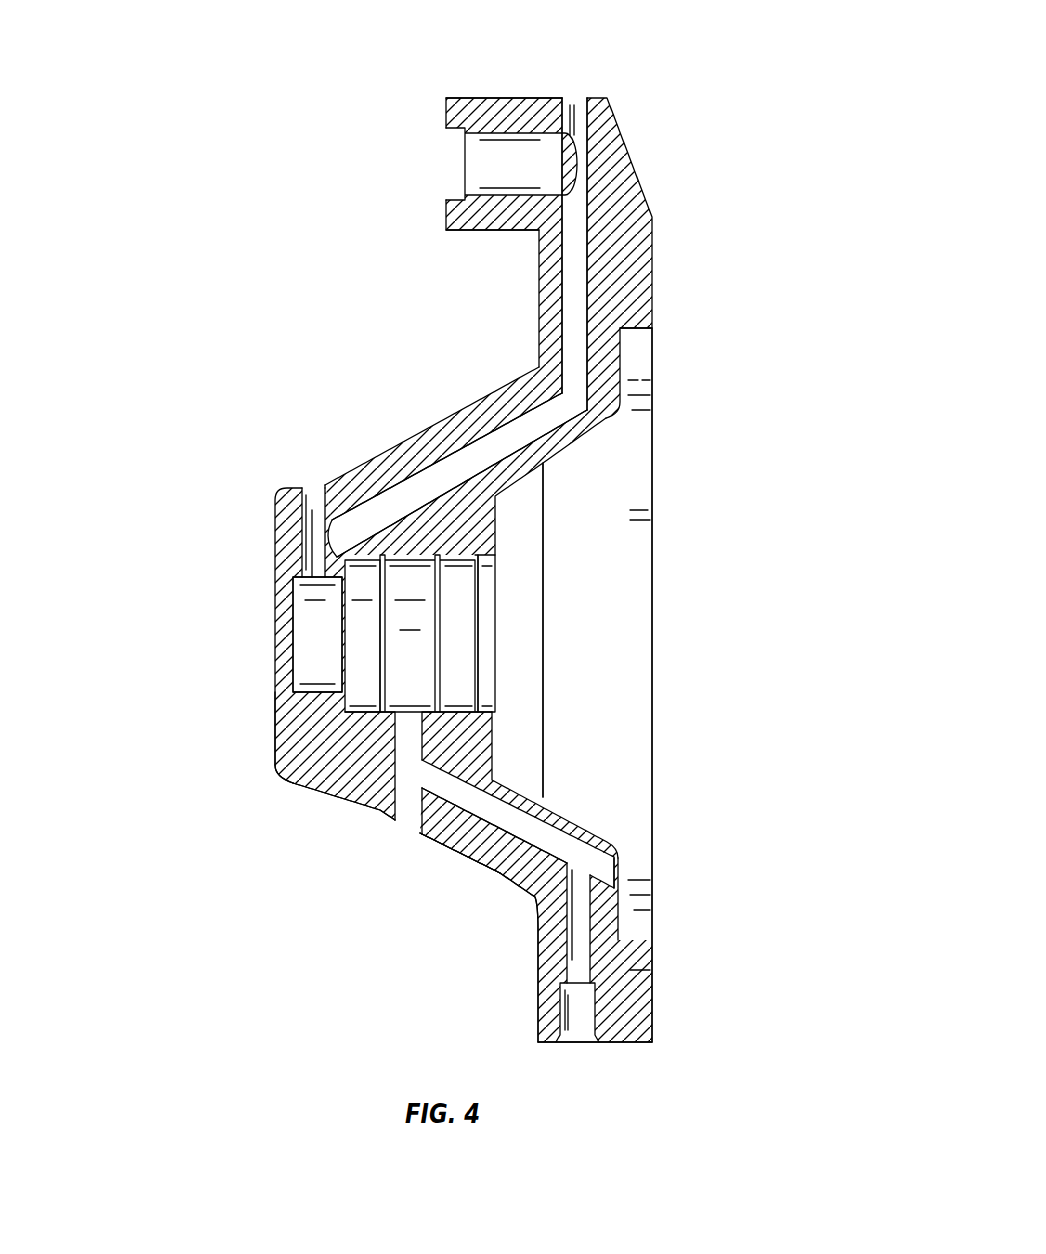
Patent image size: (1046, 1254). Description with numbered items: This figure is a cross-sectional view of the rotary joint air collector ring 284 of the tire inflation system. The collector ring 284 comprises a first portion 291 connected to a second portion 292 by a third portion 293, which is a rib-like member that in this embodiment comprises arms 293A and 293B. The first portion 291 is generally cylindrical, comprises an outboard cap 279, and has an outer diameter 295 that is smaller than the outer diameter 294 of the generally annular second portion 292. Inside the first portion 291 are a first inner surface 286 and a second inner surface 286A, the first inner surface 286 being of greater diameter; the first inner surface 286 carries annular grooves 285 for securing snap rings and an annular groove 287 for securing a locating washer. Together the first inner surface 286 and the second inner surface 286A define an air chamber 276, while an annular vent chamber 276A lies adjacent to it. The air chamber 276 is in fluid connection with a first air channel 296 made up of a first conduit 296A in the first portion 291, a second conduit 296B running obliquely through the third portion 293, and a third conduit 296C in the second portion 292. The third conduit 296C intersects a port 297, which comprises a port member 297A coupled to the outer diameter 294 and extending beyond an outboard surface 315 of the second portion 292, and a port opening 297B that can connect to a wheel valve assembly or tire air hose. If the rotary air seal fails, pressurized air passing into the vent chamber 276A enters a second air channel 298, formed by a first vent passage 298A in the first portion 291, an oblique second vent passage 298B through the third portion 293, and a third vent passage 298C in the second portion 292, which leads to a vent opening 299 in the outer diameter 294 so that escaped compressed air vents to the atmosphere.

The rotary joint air collector ring 284 is at (131, 229).
The port 297 is at (443, 110).
The port member 297A is at (483, 103).
The port opening 297B is at (452, 162).
The outboard surface 315 is at (530, 243).
The third conduit 296C is at (575, 275).
The second conduit 296B is at (382, 507).
The first air channel 296 is at (383, 600).
The first conduit 296A is at (305, 548).
The outboard cap 279 is at (300, 562).
The air chamber 276 is at (318, 645).
The first inner surface 286 is at (362, 560).
The grooves 285 is at (437, 557).
The annular groove 287 is at (487, 593).
The arm 293A is at (522, 470).
The first vent passage 298A is at (435, 745).
The second vent passage 298B is at (462, 792).
The third vent passage 298C is at (580, 918).
The arm 293B is at (545, 822).
The second portion 292 is at (640, 990).
The outer diameter 294 is at (633, 1045).
The vent opening 299 is at (580, 1020).
The third portion 293 is at (500, 855).
The second air channel 298 is at (458, 790).
The vent chamber 276A is at (400, 700).
The outer diameter 295 is at (303, 785).
The first portion 291 is at (287, 773).
The second inner surface 286A is at (283, 748).